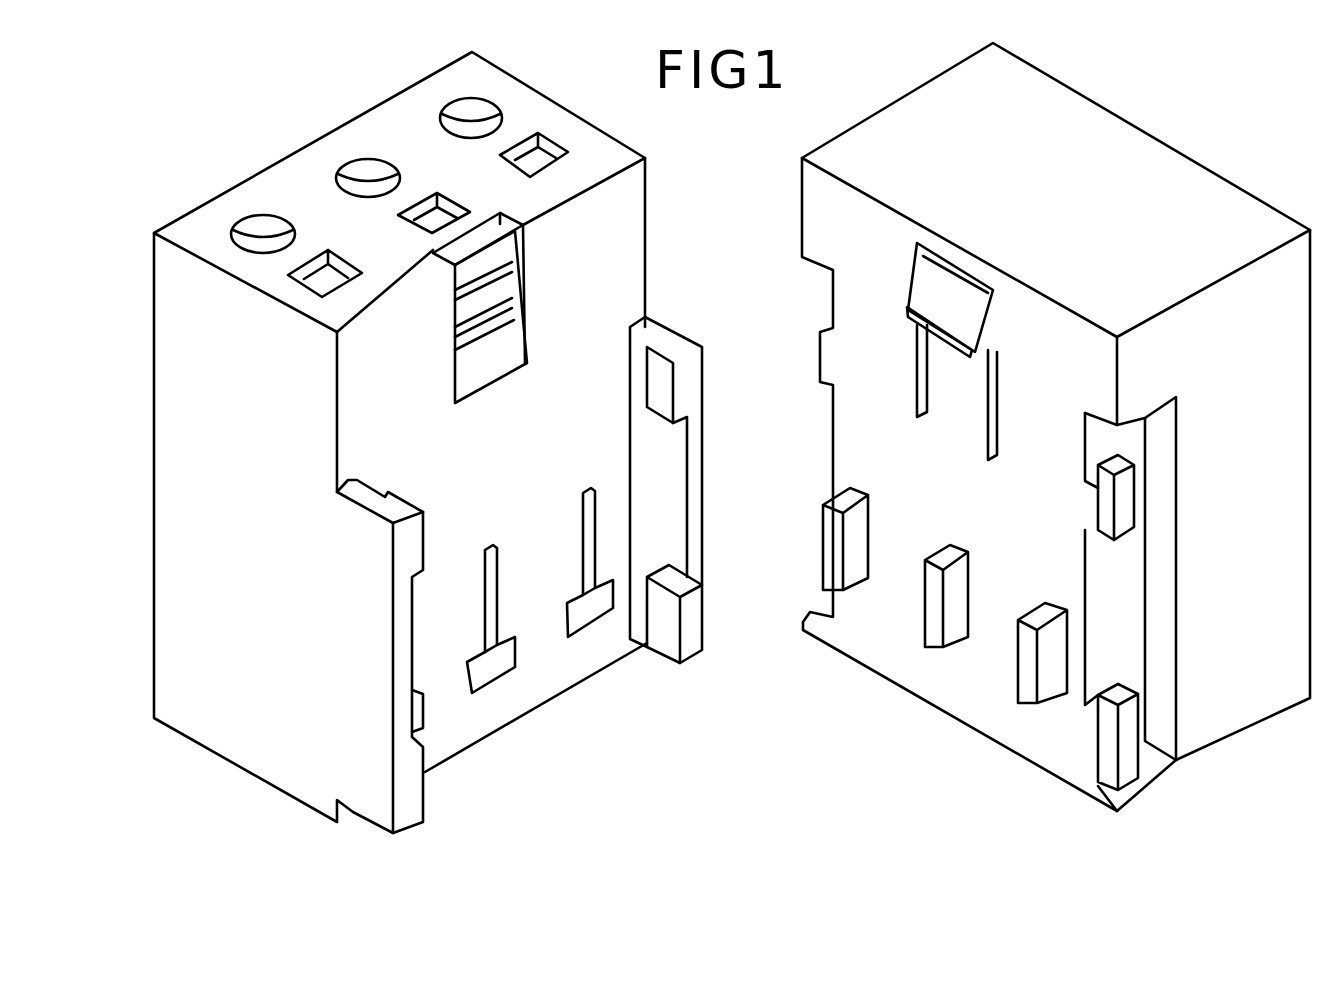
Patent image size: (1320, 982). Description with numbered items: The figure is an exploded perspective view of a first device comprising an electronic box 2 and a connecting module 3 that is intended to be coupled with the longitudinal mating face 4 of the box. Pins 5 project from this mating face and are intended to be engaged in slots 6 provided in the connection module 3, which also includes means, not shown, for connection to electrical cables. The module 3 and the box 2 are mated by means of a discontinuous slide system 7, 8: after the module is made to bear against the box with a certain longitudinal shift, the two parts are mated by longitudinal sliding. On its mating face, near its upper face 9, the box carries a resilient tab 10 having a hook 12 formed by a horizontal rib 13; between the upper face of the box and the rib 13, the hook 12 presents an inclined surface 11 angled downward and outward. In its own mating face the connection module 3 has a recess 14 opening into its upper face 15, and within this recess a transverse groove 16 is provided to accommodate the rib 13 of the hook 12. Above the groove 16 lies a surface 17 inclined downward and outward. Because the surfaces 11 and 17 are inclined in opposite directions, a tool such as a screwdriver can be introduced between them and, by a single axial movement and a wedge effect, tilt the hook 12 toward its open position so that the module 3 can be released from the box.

The electronic box 2 is at (857, 110).
The connecting module 3 is at (560, 92).
The longitudinal mating face 4 is at (902, 620).
The pins 5 is at (955, 620).
The slots 6 is at (582, 557).
The discontinuous slide system 7 is at (668, 492).
The discontinuous slide system 8 is at (1122, 746).
The upper face 9 is at (1207, 205).
The resilient tab 10 is at (940, 387).
The inclined surface 11 is at (935, 278).
The hook 12 is at (920, 357).
The horizontal rib 13 is at (907, 312).
The recess 14 is at (518, 270).
The upper face 15 is at (600, 150).
The transverse groove 16 is at (480, 314).
The inclined surface 17 is at (465, 275).